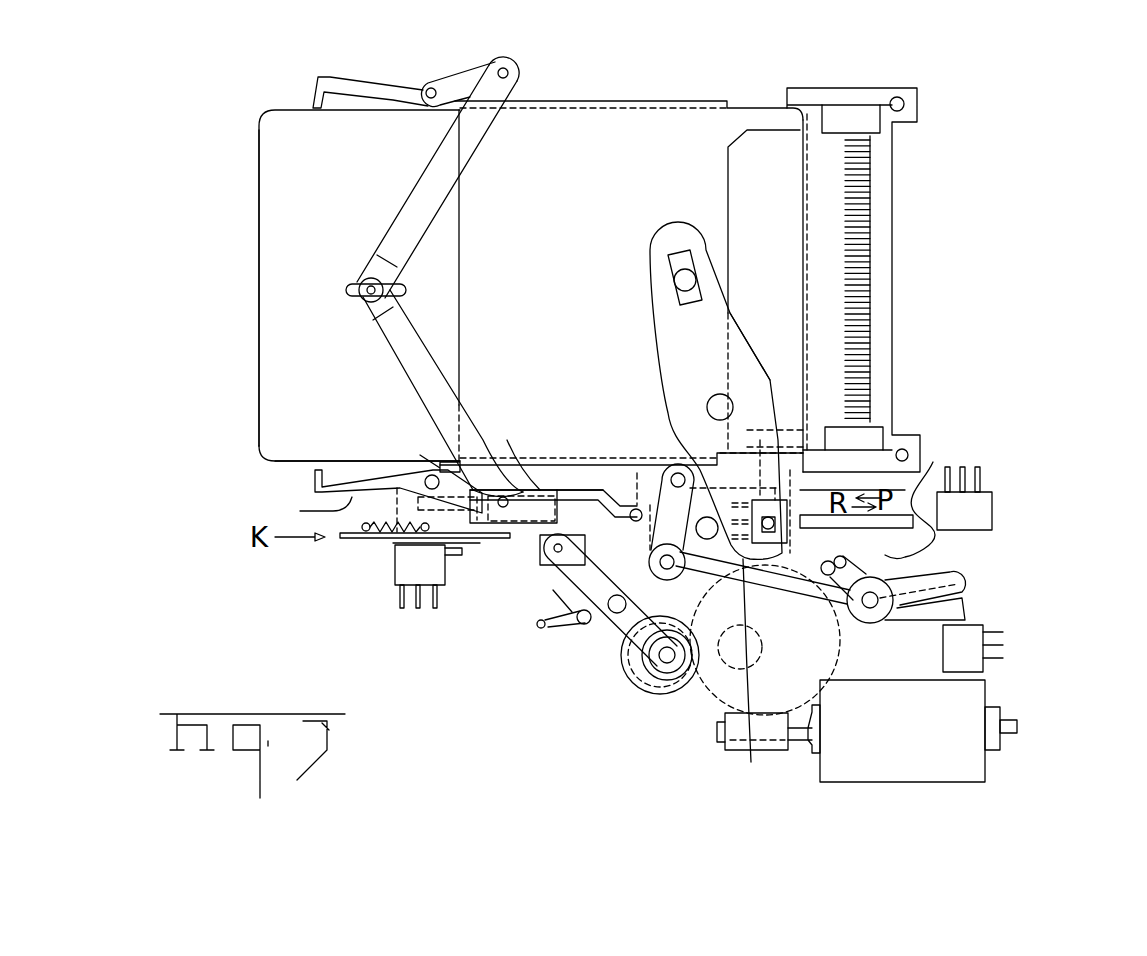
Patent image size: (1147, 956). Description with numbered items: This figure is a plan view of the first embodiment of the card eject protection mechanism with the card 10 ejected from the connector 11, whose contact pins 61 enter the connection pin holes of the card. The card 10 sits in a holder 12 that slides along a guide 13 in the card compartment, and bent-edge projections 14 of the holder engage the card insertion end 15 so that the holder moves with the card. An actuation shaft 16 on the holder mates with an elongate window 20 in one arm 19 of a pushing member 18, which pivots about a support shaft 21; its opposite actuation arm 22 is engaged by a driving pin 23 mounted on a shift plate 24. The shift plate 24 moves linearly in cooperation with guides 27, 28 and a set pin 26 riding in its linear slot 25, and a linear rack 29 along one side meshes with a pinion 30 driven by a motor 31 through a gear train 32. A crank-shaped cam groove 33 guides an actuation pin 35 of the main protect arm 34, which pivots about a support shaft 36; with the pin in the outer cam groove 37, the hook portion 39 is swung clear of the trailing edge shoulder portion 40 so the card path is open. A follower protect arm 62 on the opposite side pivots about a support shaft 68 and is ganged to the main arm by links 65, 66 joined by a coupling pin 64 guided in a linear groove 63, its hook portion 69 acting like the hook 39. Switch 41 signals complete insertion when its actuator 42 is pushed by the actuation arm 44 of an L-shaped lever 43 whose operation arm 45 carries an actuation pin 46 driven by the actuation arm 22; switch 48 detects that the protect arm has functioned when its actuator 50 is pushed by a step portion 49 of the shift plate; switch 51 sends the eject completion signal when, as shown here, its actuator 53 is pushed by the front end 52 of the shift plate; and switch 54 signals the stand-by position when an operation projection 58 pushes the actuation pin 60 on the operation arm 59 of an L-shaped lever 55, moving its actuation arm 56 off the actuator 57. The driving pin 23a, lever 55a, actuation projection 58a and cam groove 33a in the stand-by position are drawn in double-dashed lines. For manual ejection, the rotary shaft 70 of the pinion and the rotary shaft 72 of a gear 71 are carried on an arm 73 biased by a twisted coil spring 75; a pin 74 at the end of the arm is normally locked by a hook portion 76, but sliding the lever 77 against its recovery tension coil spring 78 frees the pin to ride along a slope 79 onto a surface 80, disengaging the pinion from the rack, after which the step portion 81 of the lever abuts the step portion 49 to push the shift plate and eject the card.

The card 10 is at (268, 392).
The connector 11 is at (892, 168).
The holder 12 is at (627, 133).
The guide 13 is at (570, 100).
The projections 14 is at (805, 127).
The card insertion end 15 is at (873, 327).
The actuation shaft 16 is at (683, 277).
The pushing member 18 is at (735, 317).
The arm 19 is at (707, 233).
The elongate hole or window 20 is at (690, 257).
The support shaft 21 is at (733, 402).
The actuation arm 22 is at (705, 516).
The driving pin 23 is at (723, 505).
The driving pin in stand-by position 23a is at (637, 472).
The shift plate 24 is at (597, 463).
The linear guide groove or slot 25 is at (800, 467).
The set pin 26 is at (760, 468).
The guide 27 is at (480, 570).
The guide 28 is at (867, 487).
The linear rack 29 is at (635, 552).
The pinion 30 is at (580, 632).
The motor 31 is at (950, 760).
The gear train 32 is at (657, 720).
The crank-shaped cam groove 33 is at (631, 521).
The cam groove in stand-by position 33a is at (475, 567).
The main protect arm 34 is at (300, 511).
The actuation pin 35 is at (487, 514).
The support shaft 36 is at (422, 458).
The outer cam groove 37 is at (555, 478).
The hook portion 39 is at (313, 492).
The trailing edge shoulder portion 40 is at (258, 128).
The switch 41 is at (751, 752).
The actuator 42 is at (803, 585).
The L-shaped lever 43 is at (622, 647).
The actuation arm 44 is at (718, 605).
The operation arm 45 is at (660, 478).
The actuation pin 46 is at (658, 490).
The switch 48 is at (397, 553).
The step portion 49 is at (554, 549).
The actuator 50 is at (425, 600).
The switch 51 is at (960, 512).
The front end 52 is at (940, 498).
The actuator 53 is at (925, 495).
The switch 54 is at (973, 655).
The L-shaped lever 55 is at (875, 622).
The L-shaped lever in stand-by position 55a is at (784, 646).
The actuation arm 56 is at (962, 590).
The actuator 57 is at (965, 620).
The operation projection 58 is at (920, 552).
The actuation projection in stand-by position 58a is at (790, 582).
The operation arm 59 is at (845, 555).
The actuation pin 60 is at (833, 590).
The contact pins 61 is at (843, 183).
The follower protect arm 62 is at (470, 68).
The linear groove 63 is at (347, 290).
The coupling pin 64 is at (363, 283).
The link 65 is at (390, 353).
The link 66 is at (437, 170).
The support shaft 68 is at (427, 92).
The hook portion 69 is at (317, 92).
The rotary shaft 70 is at (595, 640).
The gear 71 is at (640, 690).
The rotary shaft 72 is at (655, 690).
The arm 73 is at (547, 624).
The pin 74 is at (552, 578).
The twisted coil spring 75 is at (540, 640).
The hook portion 76 is at (518, 470).
The lever 77 is at (353, 540).
The recovery tension coil spring 78 is at (373, 537).
The slope 79 is at (492, 470).
The surface 80 is at (448, 590).
The step portion 81 is at (398, 560).